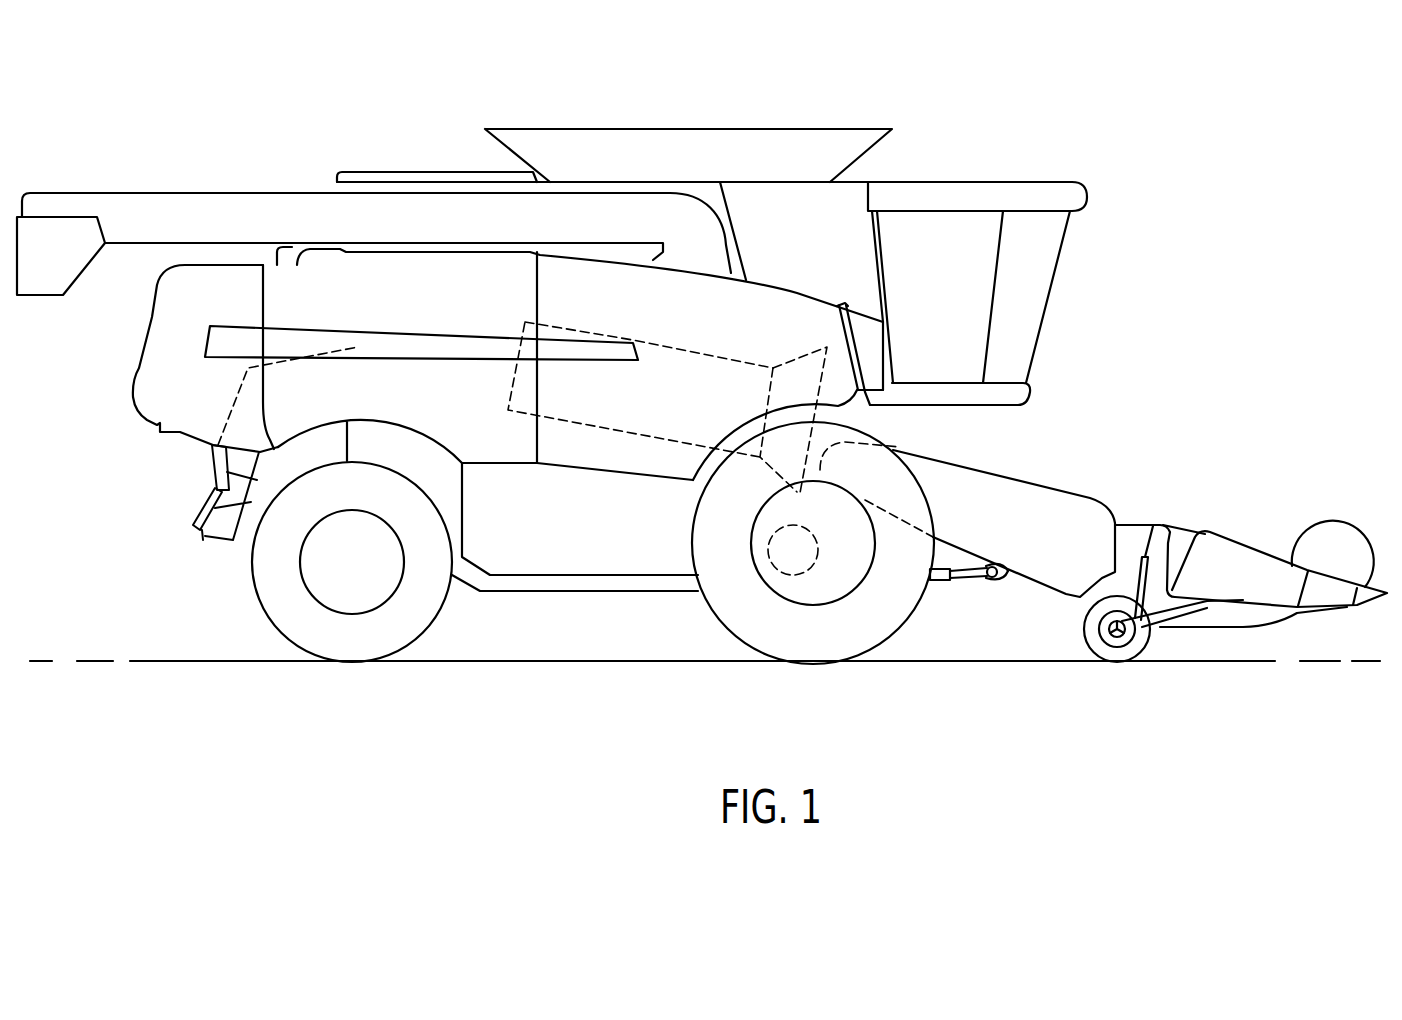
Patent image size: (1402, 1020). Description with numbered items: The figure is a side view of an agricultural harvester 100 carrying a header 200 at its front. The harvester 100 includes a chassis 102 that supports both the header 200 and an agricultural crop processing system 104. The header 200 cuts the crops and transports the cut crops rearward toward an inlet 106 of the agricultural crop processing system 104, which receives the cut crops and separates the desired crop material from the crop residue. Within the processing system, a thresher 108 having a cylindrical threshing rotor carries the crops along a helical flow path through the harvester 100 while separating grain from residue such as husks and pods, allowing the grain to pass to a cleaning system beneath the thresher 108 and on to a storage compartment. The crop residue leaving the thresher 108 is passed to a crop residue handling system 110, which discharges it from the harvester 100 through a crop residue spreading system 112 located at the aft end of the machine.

The agricultural harvester 100 is at (1089, 84).
The chassis 102 is at (515, 596).
The agricultural crop processing system 104 is at (677, 319).
The inlet 106 is at (898, 445).
The thresher 108 is at (684, 350).
The crop residue handling system 110 is at (314, 311).
The crop residue spreading system 112 is at (199, 507).
The header 200 is at (1288, 505).